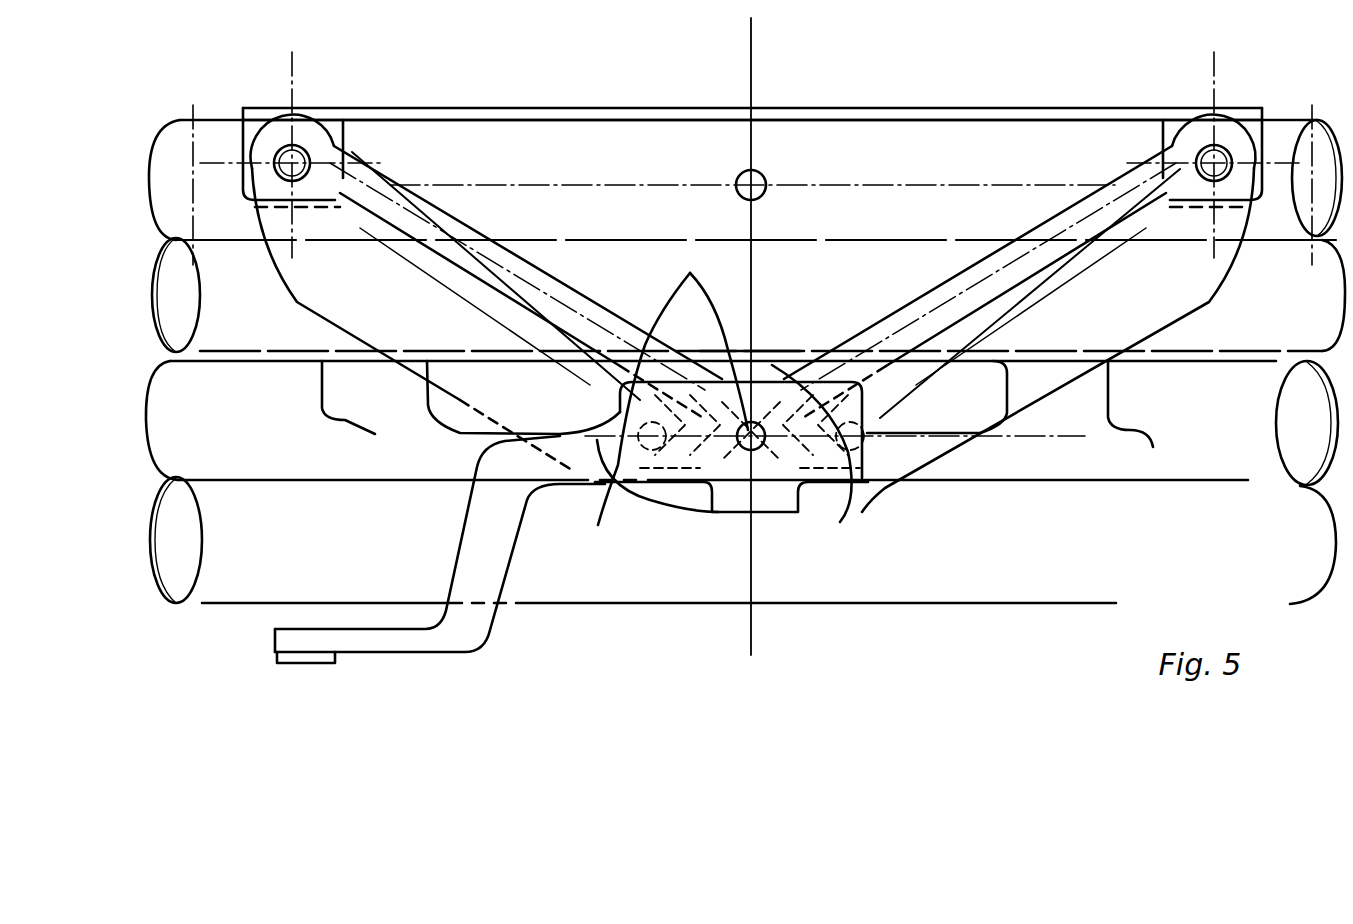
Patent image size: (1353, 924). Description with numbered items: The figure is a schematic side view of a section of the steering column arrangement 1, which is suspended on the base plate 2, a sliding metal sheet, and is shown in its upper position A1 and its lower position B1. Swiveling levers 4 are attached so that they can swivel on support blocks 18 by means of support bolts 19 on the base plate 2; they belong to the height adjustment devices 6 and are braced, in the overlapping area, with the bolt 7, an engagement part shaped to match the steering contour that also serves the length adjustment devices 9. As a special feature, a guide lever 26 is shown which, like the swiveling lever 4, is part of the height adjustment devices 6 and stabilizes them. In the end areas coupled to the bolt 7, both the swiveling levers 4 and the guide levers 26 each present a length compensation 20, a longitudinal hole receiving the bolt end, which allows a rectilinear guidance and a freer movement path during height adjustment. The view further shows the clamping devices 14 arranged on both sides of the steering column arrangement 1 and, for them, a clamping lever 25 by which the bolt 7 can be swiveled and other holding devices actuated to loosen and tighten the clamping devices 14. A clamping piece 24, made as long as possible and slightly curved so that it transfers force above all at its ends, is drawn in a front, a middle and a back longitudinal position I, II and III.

The steering column arrangement 1 is at (182, 296).
The base plate 2 is at (467, 107).
The swiveling lever 4 is at (1163, 320).
The height adjustment devices 6 is at (452, 210).
The bolt 7 is at (725, 383).
The length adjustment devices 9 is at (628, 458).
The clamping devices 14 is at (788, 348).
The support block 18 is at (257, 130).
The support bolt 19 is at (297, 153).
The length compensation 20 is at (705, 400).
The clamping piece 24 is at (335, 452).
The clamping lever 25 is at (473, 638).
The guide lever 26 is at (318, 283).
The upper position A1 is at (833, 153).
The lower position B1 is at (880, 632).
The front longitudinal position I is at (340, 420).
The middle longitudinal position II is at (423, 432).
The back longitudinal position III is at (1110, 385).